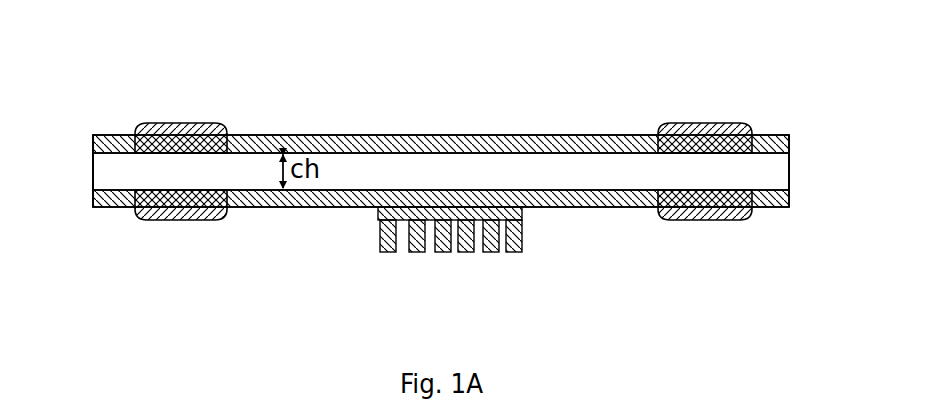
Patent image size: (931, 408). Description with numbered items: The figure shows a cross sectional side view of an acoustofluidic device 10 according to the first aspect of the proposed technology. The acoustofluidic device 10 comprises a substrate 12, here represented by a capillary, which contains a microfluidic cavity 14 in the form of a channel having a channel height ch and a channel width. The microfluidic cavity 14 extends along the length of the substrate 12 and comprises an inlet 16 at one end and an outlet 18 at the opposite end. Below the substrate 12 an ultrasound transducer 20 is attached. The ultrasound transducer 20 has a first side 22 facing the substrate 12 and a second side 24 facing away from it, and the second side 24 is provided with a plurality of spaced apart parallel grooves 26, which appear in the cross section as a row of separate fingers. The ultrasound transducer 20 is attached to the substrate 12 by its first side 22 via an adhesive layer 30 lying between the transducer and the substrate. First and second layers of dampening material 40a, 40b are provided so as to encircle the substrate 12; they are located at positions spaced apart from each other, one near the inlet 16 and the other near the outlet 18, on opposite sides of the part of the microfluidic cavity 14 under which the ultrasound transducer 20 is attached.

The acoustofluidic device 10 is at (198, 56).
The substrate 12 is at (322, 134).
The microfluidic cavity 14 is at (485, 165).
The inlet 16 is at (93, 180).
The outlet 18 is at (789, 182).
The ultrasound transducer 20 is at (522, 238).
The first side 22 is at (522, 210).
The second side 24 is at (498, 253).
The grooves 26 is at (451, 251).
The adhesive layer 30 is at (378, 207).
The first layer of dampening material 40a is at (158, 221).
The second layer of dampening material 40b is at (722, 219).